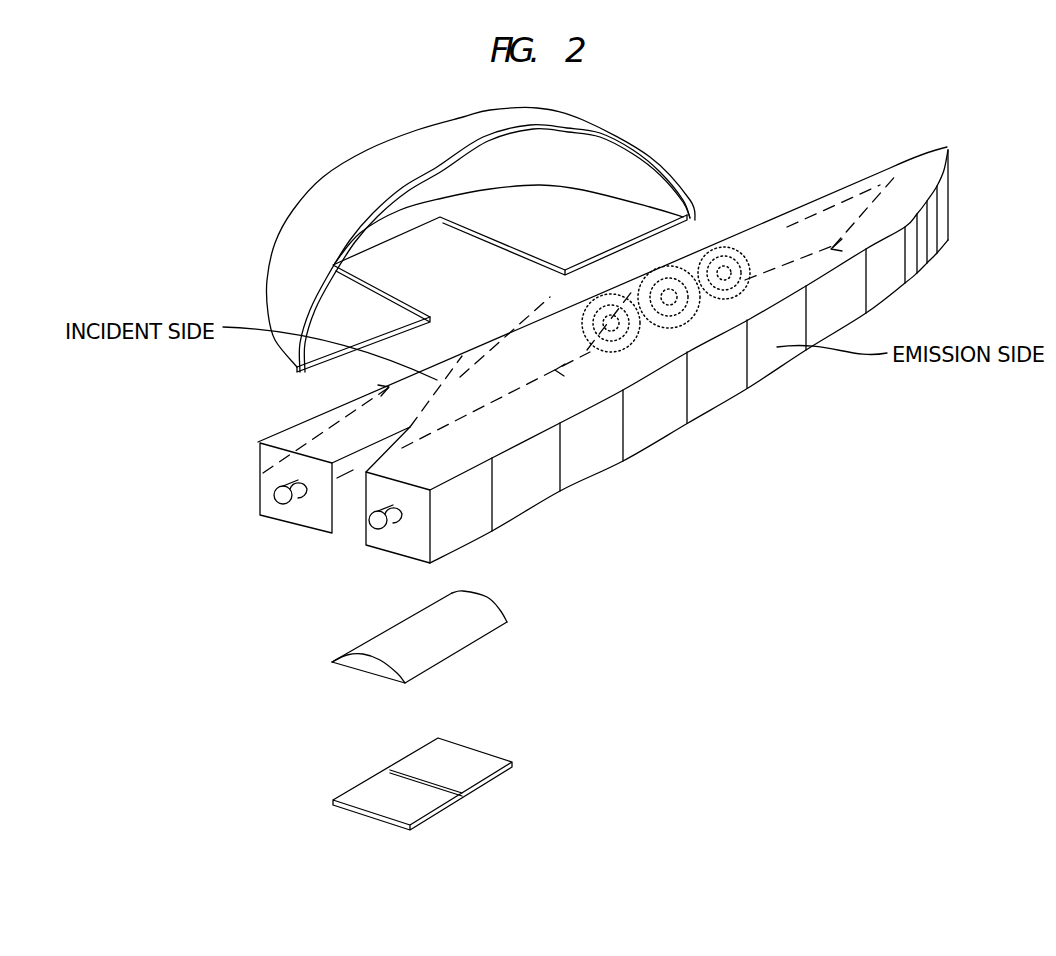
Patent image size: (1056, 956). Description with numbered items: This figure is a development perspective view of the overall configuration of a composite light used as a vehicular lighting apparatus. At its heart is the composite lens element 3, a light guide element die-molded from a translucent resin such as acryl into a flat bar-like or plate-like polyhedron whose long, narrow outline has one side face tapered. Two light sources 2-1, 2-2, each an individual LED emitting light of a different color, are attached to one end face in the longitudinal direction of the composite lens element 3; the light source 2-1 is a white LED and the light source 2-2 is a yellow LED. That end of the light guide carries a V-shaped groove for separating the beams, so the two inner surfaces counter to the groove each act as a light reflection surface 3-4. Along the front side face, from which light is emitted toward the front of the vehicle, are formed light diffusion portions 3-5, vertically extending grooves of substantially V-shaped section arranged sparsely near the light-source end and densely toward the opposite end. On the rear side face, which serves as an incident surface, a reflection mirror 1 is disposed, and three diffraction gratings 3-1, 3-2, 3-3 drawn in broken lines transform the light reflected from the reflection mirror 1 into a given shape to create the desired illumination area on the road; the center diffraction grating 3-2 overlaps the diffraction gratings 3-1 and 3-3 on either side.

The reflection mirror 1 is at (652, 161).
The composite lens element 3 is at (585, 341).
The diffraction grating 3-1 is at (613, 323).
The diffraction grating 3-2 is at (681, 303).
The diffraction grating 3-3 is at (728, 257).
The light reflection surface 3-4 is at (350, 475).
The light diffusion portion 3-5 is at (492, 504).
The light source 2-1 is at (378, 520).
The light source 2-2 is at (283, 496).